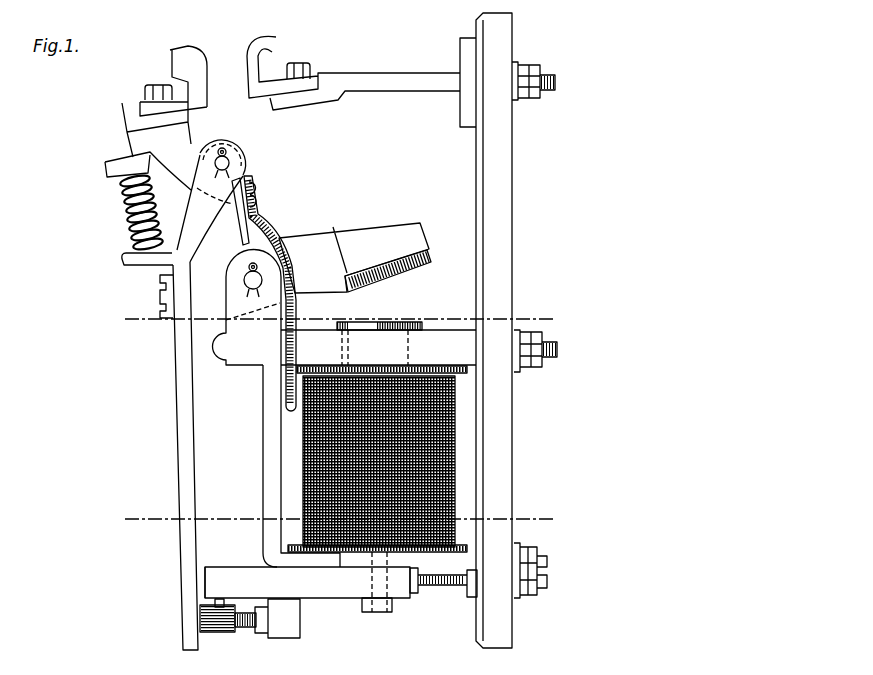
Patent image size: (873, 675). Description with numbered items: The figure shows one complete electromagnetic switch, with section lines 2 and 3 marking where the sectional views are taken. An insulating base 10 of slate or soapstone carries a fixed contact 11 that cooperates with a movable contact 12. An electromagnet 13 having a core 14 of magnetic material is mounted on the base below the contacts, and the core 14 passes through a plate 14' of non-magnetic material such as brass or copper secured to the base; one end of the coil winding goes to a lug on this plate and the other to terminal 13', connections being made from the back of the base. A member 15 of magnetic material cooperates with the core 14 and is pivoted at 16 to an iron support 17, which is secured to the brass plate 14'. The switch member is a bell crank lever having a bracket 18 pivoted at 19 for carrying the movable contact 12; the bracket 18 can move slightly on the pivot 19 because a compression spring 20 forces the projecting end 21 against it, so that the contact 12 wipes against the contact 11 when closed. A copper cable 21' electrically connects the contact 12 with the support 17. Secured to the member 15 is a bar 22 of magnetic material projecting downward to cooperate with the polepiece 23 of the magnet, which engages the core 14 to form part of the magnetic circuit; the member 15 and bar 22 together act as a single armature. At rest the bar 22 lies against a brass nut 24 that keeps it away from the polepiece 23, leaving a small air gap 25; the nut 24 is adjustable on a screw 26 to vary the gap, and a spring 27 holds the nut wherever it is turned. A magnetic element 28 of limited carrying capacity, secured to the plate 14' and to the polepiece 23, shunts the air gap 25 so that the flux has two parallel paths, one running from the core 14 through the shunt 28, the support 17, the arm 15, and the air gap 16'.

The section line 2— 2 is at (341, 319).
The section line 3— 3 is at (341, 519).
The insulating base 10 is at (513, 212).
The fixed contact 11 is at (273, 52).
The movable contact 12 is at (189, 61).
The electromagnet 13 is at (385, 489).
The terminal 13' is at (443, 578).
The core 14 is at (379, 313).
The plate of non-magnetic material 14' is at (378, 347).
The member of magnetic material 15 is at (311, 240).
The pivot 16 is at (233, 280).
The air gap 16' is at (397, 273).
The iron support 17 is at (247, 308).
The bracket 18 is at (196, 141).
The pivot 19 is at (231, 163).
The compression spring 20 is at (130, 212).
The projecting end 21 is at (236, 211).
The copper cable 21' is at (280, 293).
The bar of magnetic material 22 is at (175, 452).
The polepiece 23 is at (335, 593).
The brass nut 24 is at (219, 633).
The air gap 25 is at (203, 566).
The screw 26 is at (246, 628).
The spring 27 is at (229, 603).
The magnetic element 28 is at (268, 387).